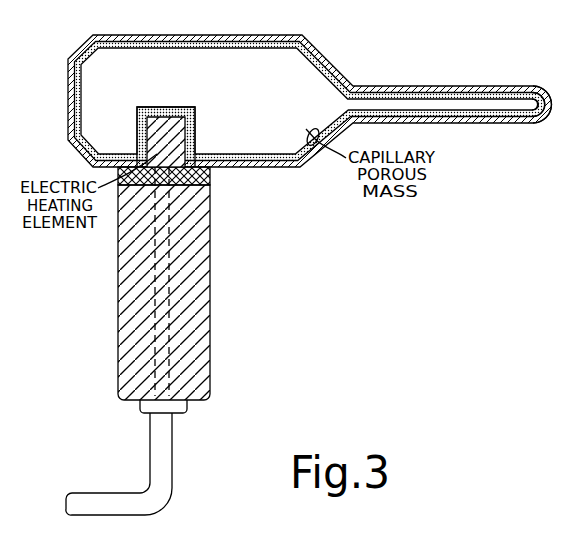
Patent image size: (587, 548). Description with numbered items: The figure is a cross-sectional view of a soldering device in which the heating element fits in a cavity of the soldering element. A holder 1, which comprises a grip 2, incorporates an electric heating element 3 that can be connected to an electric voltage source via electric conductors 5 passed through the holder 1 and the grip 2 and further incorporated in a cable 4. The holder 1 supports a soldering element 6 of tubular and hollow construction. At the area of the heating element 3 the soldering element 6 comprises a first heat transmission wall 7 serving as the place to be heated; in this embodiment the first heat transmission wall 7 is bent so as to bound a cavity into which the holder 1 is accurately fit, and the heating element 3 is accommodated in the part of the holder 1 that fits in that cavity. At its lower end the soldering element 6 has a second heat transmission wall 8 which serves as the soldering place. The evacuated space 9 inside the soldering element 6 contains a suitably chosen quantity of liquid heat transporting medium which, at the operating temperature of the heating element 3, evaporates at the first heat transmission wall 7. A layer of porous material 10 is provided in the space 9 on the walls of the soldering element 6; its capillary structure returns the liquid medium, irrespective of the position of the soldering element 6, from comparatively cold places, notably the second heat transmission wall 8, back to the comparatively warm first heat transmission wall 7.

The holder 1 is at (212, 169).
The grip 2 is at (192, 293).
The electric heating element 3 is at (172, 143).
The cable 4 is at (158, 472).
The electric conductors 5 is at (170, 335).
The soldering element 6 is at (307, 39).
The first heat transmission wall 7 is at (194, 148).
The second heat transmission wall 8 is at (534, 90).
The evacuated space 9 is at (284, 101).
The layer of porous material 10 is at (87, 136).